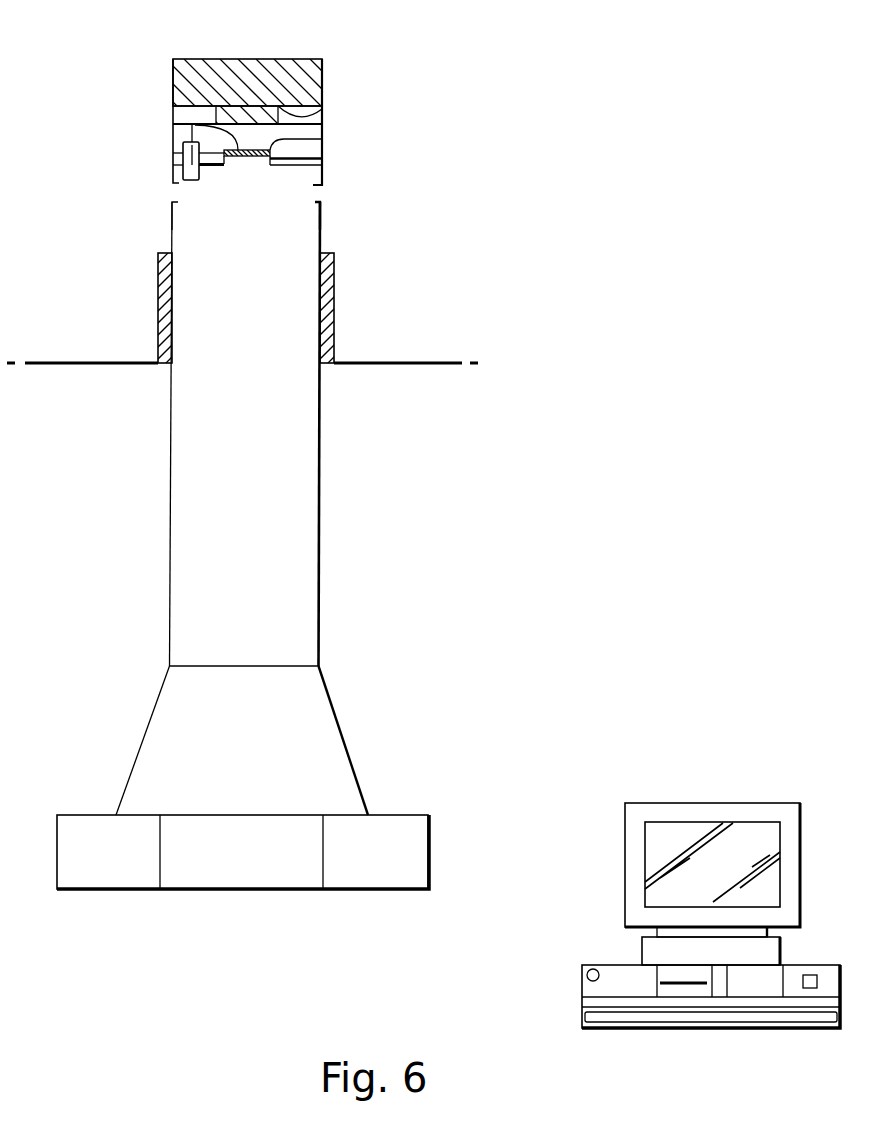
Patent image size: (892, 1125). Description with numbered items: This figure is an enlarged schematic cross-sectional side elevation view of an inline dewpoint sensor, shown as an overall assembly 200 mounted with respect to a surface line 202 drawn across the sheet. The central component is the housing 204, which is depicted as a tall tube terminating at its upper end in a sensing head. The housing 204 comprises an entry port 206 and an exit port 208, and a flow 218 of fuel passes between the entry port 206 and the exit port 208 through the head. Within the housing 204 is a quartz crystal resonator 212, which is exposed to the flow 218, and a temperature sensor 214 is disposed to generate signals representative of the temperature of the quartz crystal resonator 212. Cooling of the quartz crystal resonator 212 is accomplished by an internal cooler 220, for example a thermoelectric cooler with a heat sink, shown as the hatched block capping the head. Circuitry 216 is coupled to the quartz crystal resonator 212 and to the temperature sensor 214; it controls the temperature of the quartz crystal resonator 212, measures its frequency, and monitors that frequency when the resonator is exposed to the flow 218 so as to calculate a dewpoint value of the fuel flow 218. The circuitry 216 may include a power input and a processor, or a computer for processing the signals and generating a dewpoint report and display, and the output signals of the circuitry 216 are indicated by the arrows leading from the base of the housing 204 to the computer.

The measurement system 200 is at (76, 50).
The ground surface 202 is at (69, 364).
The housing 204 is at (320, 447).
The entry port 206 is at (322, 200).
The exit port 208 is at (172, 198).
The quartz crystal resonator 212 is at (323, 140).
The temperature sensor 214 is at (183, 153).
The circuitry 216 is at (138, 890).
The flow 218 is at (463, 43).
The internal cooler 220 is at (323, 110).